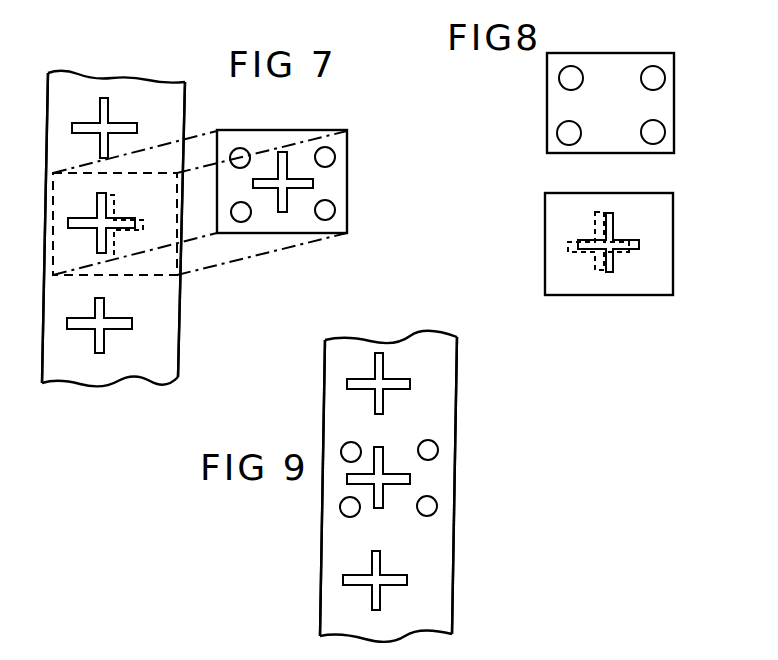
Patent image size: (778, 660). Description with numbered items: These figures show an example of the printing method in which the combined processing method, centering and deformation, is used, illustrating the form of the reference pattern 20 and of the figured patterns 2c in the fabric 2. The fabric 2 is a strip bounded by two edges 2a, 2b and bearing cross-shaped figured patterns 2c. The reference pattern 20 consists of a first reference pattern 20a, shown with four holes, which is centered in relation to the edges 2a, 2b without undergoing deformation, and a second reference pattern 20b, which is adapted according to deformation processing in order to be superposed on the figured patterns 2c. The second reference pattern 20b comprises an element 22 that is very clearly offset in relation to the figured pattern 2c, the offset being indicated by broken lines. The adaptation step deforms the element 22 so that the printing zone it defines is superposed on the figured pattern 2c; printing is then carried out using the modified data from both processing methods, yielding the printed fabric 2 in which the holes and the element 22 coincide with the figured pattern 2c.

In FIG. 7, the fabric 2 is at (162, 98).
In FIG. 9, the fabric 2 is at (427, 410).
In FIG. 7, the edge of the fabric 2a is at (42, 331).
In FIG. 9, the edge of the fabric 2a is at (322, 545).
In FIG. 7, the edge of the fabric 2b is at (178, 328).
In FIG. 9, the edge of the fabric 2b is at (453, 553).
In FIG. 7, the figured pattern 2c is at (107, 108).
In FIG. 8, the figured pattern 2c is at (600, 270).
In FIG. 9, the figured pattern 2c is at (407, 480).
In FIG. 7, the reference pattern 20 is at (293, 118).
In FIG. 8, the reference pattern 20 is at (700, 43).
In FIG. 8, the first reference pattern 20a is at (545, 106).
In FIG. 8, the second reference pattern 20b is at (545, 234).
In FIG. 8, the element 22 is at (627, 250).
In FIG. 9, the element 22 is at (378, 477).